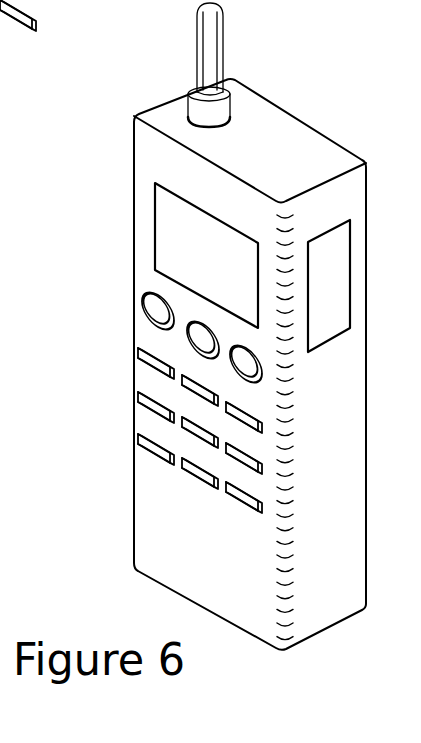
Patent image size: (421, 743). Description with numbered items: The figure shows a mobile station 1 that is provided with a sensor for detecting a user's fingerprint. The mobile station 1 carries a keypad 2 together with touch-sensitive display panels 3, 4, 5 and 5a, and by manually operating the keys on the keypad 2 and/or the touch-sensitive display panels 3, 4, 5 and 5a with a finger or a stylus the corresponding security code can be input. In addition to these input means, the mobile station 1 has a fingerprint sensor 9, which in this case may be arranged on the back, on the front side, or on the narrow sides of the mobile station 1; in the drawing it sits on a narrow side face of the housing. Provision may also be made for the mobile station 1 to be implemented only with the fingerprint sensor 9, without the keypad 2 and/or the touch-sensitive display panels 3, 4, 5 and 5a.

The mobile station 1 is at (268, 125).
The keypad 2 is at (168, 394).
The touch-sensitive display panel 3 is at (155, 308).
The touch-sensitive display panel 4 is at (205, 340).
The touch-sensitive display panel 5 is at (262, 375).
The touch-sensitive display panel 5a is at (176, 237).
The fingerprint sensor 9 is at (335, 273).